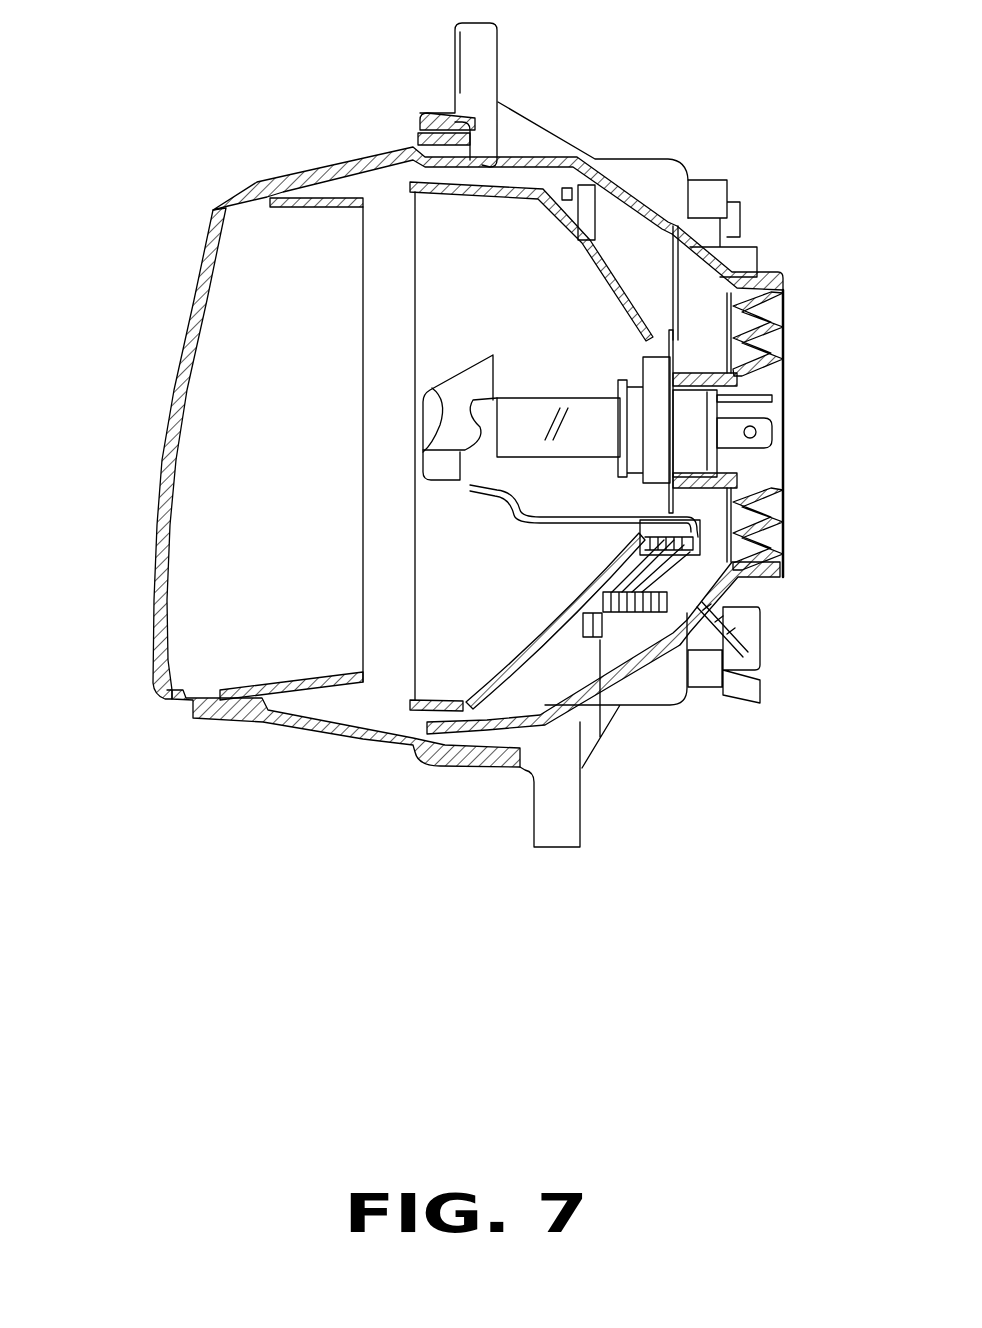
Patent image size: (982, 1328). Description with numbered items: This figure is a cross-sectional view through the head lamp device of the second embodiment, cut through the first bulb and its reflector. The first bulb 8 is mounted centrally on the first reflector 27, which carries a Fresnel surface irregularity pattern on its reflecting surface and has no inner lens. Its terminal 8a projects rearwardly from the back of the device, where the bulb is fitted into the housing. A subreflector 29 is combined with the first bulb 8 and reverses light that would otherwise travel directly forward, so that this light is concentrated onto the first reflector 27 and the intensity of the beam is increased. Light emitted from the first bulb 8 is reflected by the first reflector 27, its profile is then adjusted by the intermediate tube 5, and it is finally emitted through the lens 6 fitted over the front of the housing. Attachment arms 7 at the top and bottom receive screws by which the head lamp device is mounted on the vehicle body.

The intermediate tube 5 is at (263, 683).
The lens 6 is at (166, 404).
The attachment arm 7 is at (453, 67).
The first bulb 8 is at (570, 397).
The terminal 8a is at (773, 427).
The first reflector 27 is at (497, 663).
The subreflector 29 is at (428, 422).